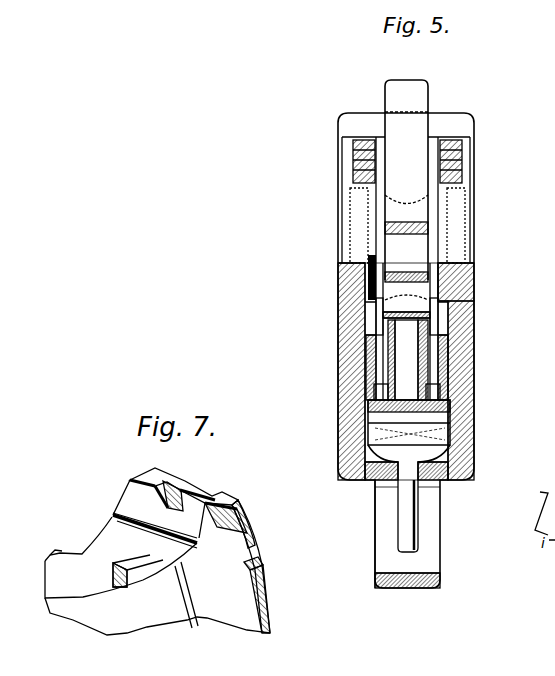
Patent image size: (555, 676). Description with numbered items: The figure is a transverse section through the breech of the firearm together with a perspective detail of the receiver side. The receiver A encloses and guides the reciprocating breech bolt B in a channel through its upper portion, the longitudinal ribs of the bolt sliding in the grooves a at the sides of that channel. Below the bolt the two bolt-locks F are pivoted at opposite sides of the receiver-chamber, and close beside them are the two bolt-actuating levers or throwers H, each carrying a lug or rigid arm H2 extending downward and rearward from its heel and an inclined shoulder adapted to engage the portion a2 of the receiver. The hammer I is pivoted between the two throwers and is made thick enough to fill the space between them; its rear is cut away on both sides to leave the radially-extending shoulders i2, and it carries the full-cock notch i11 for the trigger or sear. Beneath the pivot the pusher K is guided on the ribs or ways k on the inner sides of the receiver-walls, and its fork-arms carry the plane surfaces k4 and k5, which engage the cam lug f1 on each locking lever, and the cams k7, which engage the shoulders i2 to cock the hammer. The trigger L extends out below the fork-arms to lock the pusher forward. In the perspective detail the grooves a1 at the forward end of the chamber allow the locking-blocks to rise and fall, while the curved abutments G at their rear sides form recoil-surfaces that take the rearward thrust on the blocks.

In FIG. 5, the hammer I is at (389, 101).
In FIG. 5, the grooves a is at (353, 165).
In FIG. 7, the grooves a is at (124, 502).
In FIG. 5, the bolt-actuating levers (throwers) H is at (380, 213).
In FIG. 5, the receiver A is at (440, 116).
In FIG. 7, the receiver A is at (239, 501).
In FIG. 5, the reciprocating breech bolt B is at (380, 136).
In FIG. 5, the bolt-locks F is at (375, 318).
In FIG. 5, the lug or rigid arm H2 is at (380, 352).
In FIG. 5, the cam projection or lug f1 is at (365, 365).
In FIG. 5, the plane surface k5 is at (370, 392).
In FIG. 5, the pusher K is at (367, 414).
In FIG. 5, the ribs or ways k is at (370, 432).
In FIG. 5, the plane surface k4 is at (362, 452).
In FIG. 5, the radially-extending shoulders i2 is at (372, 460).
In FIG. 5, the cams k7 is at (348, 480).
In FIG. 5, the full-cock notch i11 is at (371, 483).
In FIG. 5, the trigger L is at (398, 520).
In FIG. 7, the curved abutments G is at (180, 488).
In FIG. 7, the portion of the receiver a2 is at (130, 565).
In FIG. 7, the grooves a1 is at (157, 576).